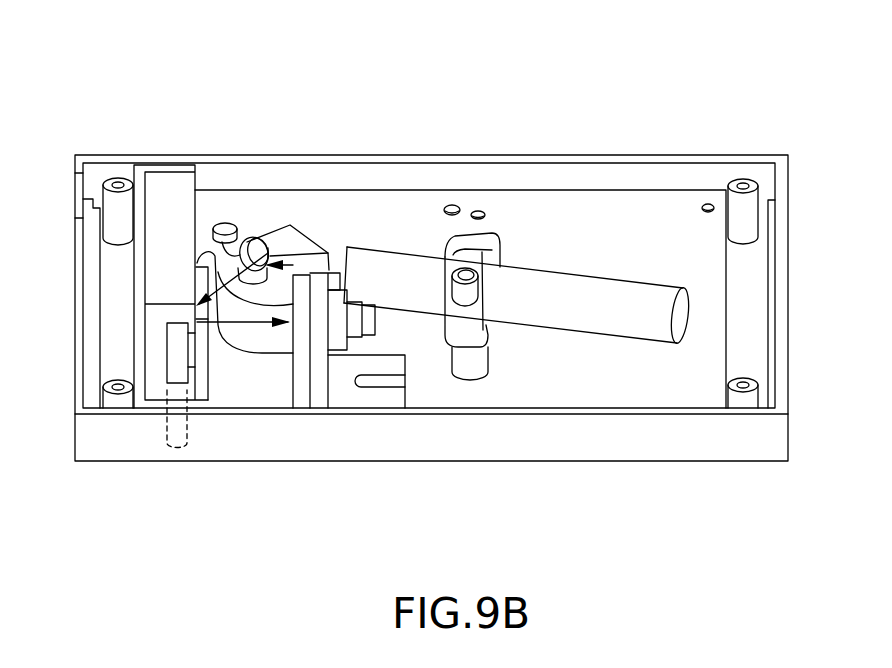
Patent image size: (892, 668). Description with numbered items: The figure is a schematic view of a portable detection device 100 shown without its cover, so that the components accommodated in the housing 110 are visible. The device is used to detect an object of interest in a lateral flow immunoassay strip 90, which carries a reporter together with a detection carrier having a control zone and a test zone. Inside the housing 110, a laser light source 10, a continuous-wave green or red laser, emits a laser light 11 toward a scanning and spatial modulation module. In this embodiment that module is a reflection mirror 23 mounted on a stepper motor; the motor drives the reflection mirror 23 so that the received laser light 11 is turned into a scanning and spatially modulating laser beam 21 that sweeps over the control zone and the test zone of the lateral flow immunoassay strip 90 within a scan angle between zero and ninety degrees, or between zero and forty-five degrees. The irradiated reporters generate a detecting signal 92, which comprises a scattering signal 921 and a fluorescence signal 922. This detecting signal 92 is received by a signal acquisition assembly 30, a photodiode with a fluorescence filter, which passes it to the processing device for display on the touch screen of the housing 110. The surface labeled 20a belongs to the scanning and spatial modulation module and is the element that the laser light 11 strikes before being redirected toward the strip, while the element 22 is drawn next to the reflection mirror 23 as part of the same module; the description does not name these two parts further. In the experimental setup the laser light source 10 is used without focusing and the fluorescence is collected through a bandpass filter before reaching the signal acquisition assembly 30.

The portable detection device 100 is at (127, 105).
The housing 110 is at (748, 440).
The laser light source 10 is at (598, 308).
The laser light 11 is at (344, 248).
The reflecting surface 20a is at (302, 231).
The scanning and spatially modulating laser beam 21 is at (195, 257).
The lens 22 is at (250, 240).
The reflection mirror 23 is at (268, 252).
The signal acquisition assembly 30 is at (297, 347).
The lateral flow immunoassay strip 90 is at (177, 445).
The detecting signal 92 is at (241, 322).
The scattering signal 921 is at (232, 279).
The fluorescence signal 922 is at (279, 265).